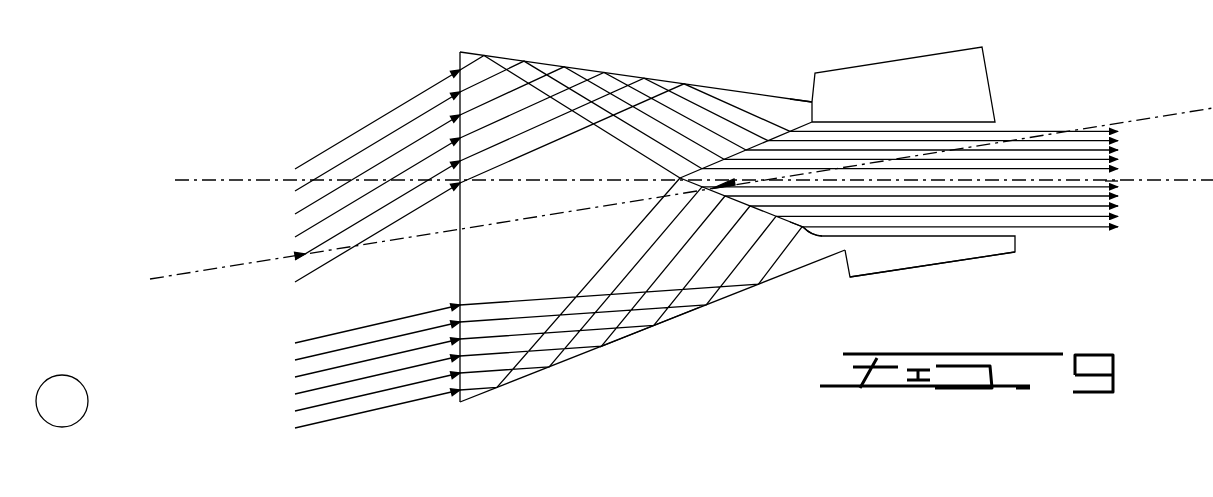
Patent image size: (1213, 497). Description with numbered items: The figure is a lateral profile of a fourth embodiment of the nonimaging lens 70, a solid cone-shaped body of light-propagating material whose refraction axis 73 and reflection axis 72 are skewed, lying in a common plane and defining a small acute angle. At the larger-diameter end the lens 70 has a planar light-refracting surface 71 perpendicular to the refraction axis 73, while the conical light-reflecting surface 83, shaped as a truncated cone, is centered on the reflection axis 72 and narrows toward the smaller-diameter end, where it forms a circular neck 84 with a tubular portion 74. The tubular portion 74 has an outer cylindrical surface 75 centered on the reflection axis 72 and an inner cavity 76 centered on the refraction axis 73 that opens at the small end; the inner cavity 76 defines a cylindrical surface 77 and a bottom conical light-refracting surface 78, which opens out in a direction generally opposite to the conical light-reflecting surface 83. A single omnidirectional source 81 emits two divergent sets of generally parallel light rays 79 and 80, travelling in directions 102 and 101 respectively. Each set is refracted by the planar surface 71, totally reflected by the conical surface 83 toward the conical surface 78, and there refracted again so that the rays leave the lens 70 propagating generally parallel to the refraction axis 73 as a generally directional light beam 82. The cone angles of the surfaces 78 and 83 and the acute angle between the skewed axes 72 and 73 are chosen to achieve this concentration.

The nonimaging lens 70 is at (704, 76).
The planar light-refracting surface 71 is at (458, 246).
The reflection axis 72 is at (188, 271).
The refraction axis 73 is at (262, 178).
The tubular portion 74 is at (930, 255).
The outer cylindrical surface 75 is at (893, 278).
The inner cavity 76 is at (1000, 127).
The cylindrical surface 77 is at (910, 126).
The bottom conical light-refracting surface 78 is at (772, 215).
The light rays 79 is at (348, 352).
The light rays 80 is at (395, 215).
The omnidirectional source 81 is at (80, 380).
The directional light beam 82 is at (1000, 176).
The conical light-reflecting surface 83 is at (663, 318).
The circular neck 84 is at (808, 100).
The propagation directions 101 is at (445, 72).
The propagation directions 102 is at (452, 323).